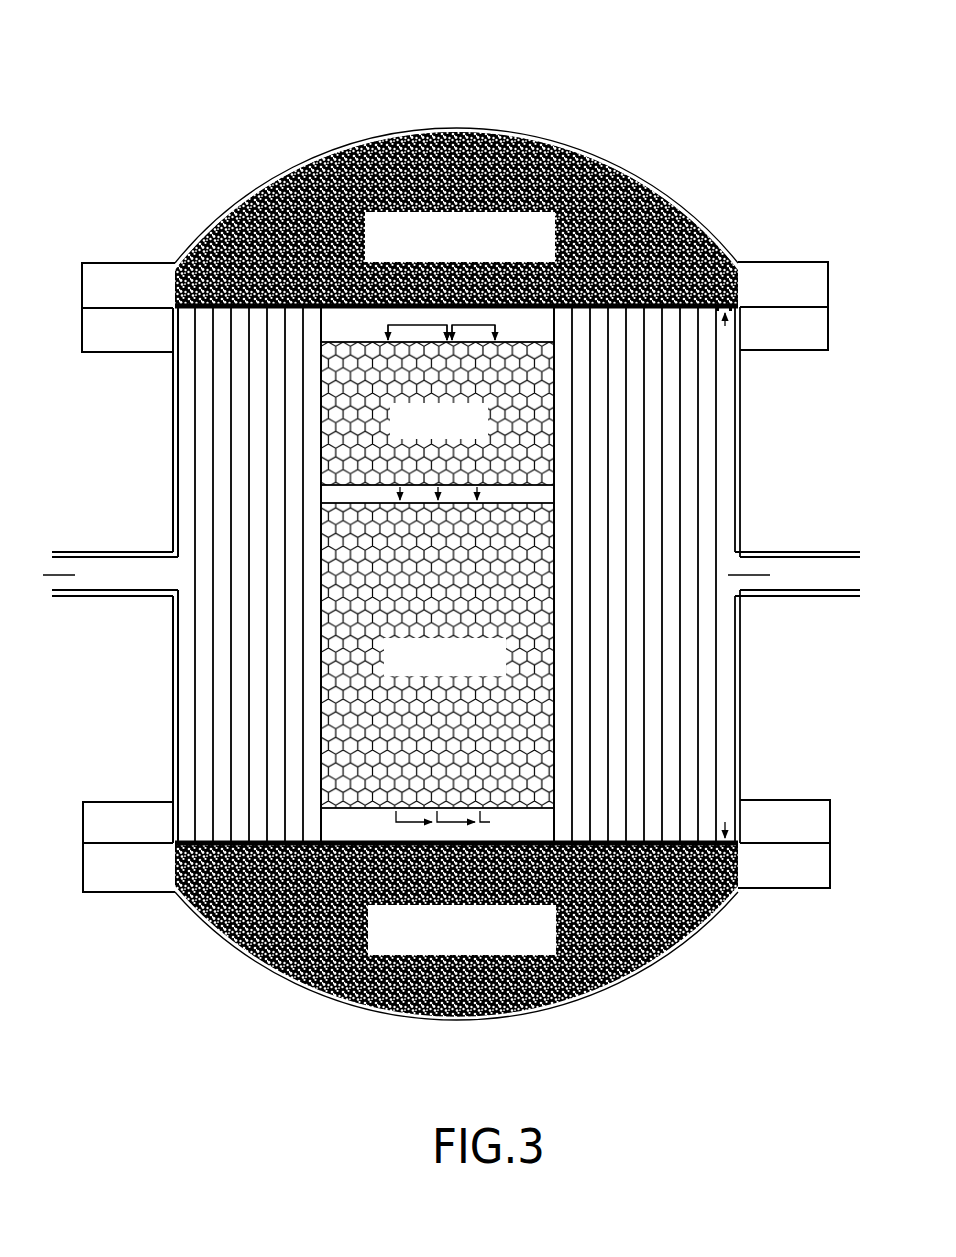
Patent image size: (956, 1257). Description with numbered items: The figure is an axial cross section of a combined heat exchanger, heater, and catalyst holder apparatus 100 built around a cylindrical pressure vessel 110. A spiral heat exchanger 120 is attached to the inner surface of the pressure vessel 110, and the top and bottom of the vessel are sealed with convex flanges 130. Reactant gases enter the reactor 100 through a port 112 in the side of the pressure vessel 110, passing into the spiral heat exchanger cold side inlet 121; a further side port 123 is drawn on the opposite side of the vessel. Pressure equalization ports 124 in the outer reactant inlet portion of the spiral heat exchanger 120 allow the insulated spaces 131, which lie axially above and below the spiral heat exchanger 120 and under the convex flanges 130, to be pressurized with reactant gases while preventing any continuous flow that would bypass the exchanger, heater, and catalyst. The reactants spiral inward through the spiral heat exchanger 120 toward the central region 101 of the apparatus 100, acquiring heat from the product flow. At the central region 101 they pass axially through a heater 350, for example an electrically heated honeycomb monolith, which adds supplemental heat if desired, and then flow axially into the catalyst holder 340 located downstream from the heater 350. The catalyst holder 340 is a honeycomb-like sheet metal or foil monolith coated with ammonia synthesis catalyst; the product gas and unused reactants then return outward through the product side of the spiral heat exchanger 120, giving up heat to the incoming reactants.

The apparatus 100 is at (456, 426).
The central region 101 is at (423, 462).
The cylindrical pressure vessel 110 is at (742, 410).
The port 112 is at (837, 587).
The spiral heat exchanger 120 is at (213, 682).
The spiral heat exchanger cold side inlet 121 is at (738, 565).
The left port 123 is at (110, 543).
The pressure equalization ports 124 is at (727, 305).
The convex flanges 130 is at (745, 262).
The insulated spaces 131 is at (318, 167).
The catalyst holder 340 is at (352, 677).
The heater 350 is at (355, 427).